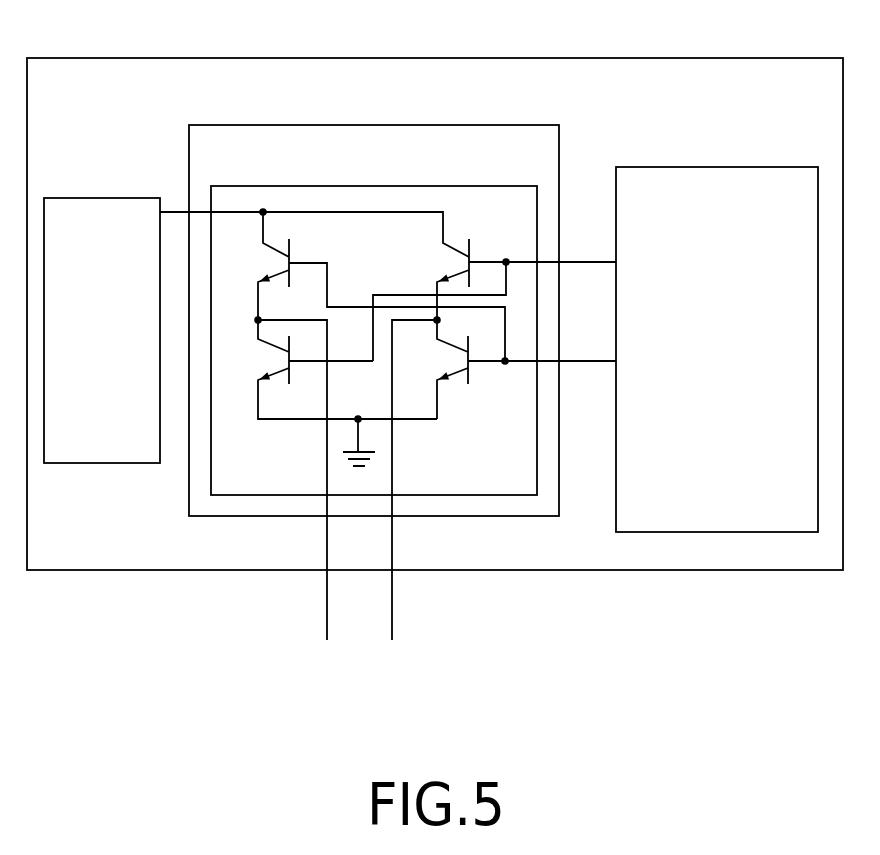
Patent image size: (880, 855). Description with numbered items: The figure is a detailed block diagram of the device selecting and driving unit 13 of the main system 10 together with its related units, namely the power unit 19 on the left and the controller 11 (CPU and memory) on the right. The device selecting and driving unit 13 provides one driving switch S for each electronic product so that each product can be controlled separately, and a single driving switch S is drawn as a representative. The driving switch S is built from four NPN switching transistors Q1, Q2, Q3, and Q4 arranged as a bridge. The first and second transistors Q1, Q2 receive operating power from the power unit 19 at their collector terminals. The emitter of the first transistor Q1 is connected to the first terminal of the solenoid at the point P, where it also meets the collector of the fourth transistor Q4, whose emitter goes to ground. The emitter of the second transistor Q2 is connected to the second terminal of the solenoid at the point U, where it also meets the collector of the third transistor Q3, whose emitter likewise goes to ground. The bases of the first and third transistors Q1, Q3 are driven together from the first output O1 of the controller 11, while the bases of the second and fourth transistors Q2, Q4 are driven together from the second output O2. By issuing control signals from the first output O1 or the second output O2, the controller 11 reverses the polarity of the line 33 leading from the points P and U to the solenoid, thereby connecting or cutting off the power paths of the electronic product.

The main system 10 is at (423, 58).
The controller 11 is at (715, 167).
The device selecting and driving unit 13 is at (371, 125).
The power unit 19 is at (100, 198).
The line 33 is at (392, 640).
The driving switch S is at (519, 186).
The first transistor Q1 is at (494, 300).
The second transistor Q2 is at (366, 286).
The third transistor Q3 is at (332, 369).
The fourth transistor Q4 is at (513, 369).
The point U is at (246, 319).
The point P is at (446, 320).
The first output O1 is at (587, 243).
The second output O2 is at (587, 343).